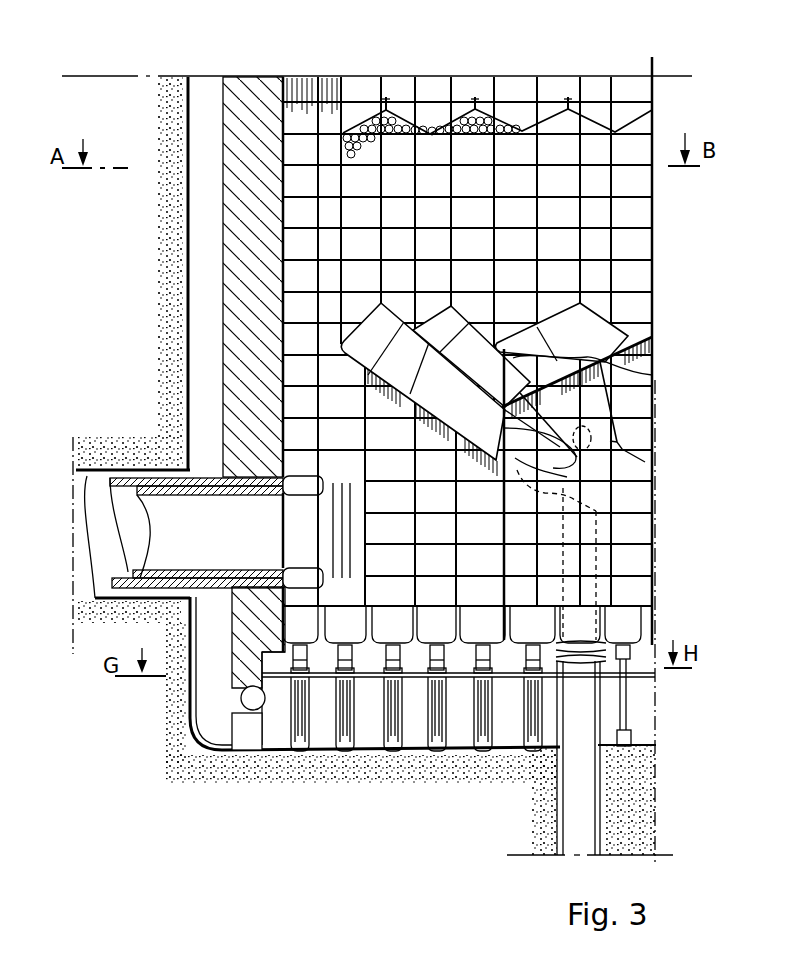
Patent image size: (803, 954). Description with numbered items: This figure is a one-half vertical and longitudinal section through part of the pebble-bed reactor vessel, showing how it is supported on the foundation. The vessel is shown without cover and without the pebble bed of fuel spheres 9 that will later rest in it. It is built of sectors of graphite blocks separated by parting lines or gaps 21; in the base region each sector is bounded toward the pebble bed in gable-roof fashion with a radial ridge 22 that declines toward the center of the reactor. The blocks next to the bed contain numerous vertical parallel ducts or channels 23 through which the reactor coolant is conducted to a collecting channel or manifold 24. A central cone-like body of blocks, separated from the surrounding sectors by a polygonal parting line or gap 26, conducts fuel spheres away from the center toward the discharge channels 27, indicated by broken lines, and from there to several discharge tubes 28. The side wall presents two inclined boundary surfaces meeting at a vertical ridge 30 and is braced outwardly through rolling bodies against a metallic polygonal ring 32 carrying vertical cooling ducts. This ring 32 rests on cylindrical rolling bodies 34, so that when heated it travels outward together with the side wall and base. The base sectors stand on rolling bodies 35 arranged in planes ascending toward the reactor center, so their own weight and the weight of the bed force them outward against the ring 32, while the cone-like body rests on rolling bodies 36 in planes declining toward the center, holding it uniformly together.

The fuel spheres 9 is at (397, 120).
The parting lines or gaps 21 is at (605, 363).
The radial ridge 22 is at (600, 336).
The ignition zone 23 is at (580, 396).
The collecting channel or manifold 24 is at (175, 543).
The polygonal parting line or gap 26 is at (505, 545).
The discharge channels 27 is at (515, 487).
The discharge tubes 28 is at (582, 725).
The vertical ridge 30 is at (383, 92).
The metallic polygonal ring 32 is at (245, 266).
The cylindrical rolling bodies 34 is at (250, 700).
The rolling bodies 35 is at (482, 658).
The rolling bodies 36 is at (532, 657).